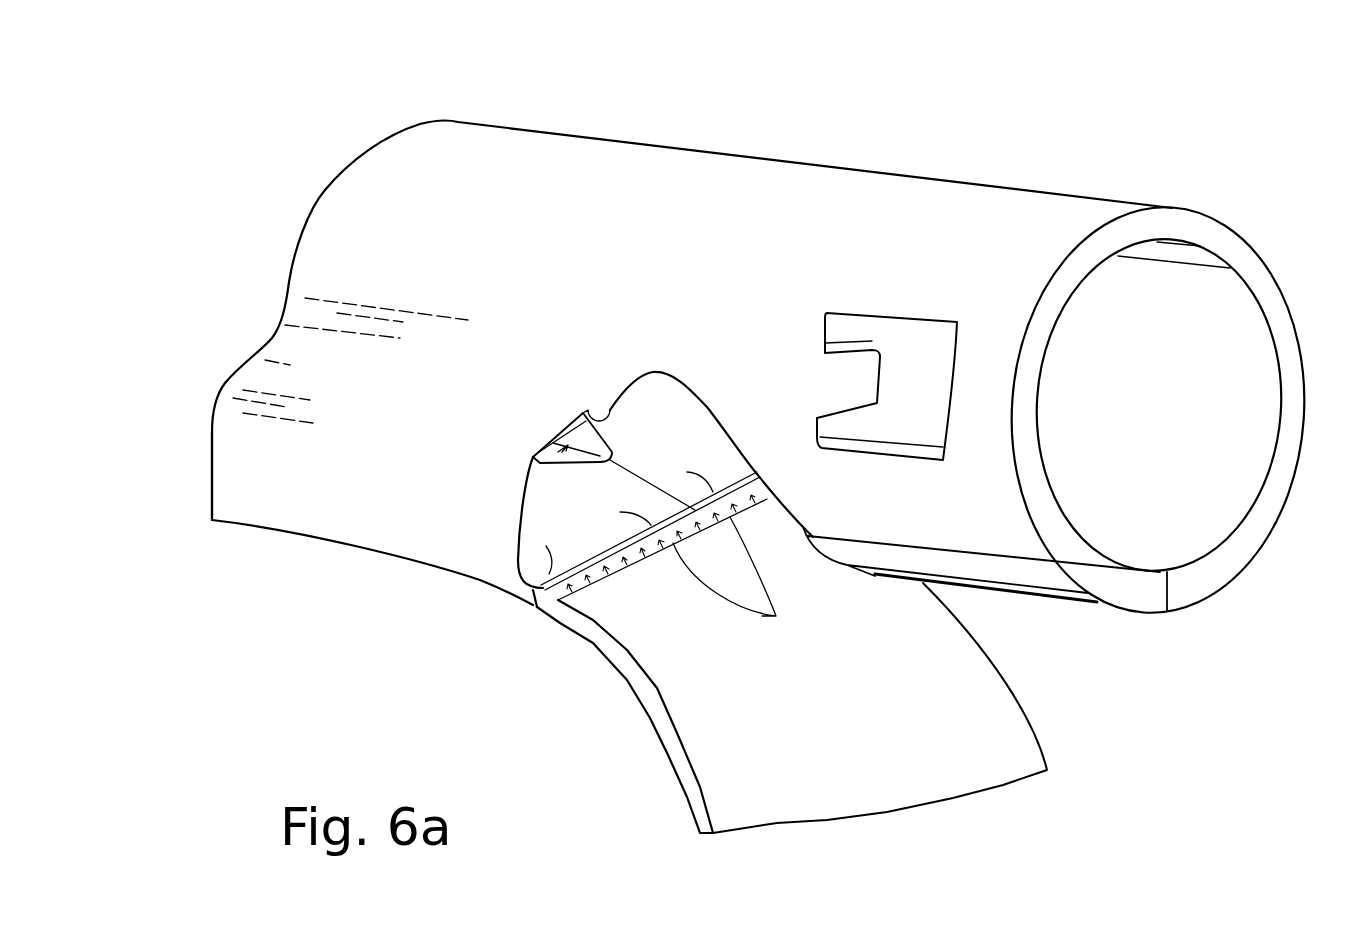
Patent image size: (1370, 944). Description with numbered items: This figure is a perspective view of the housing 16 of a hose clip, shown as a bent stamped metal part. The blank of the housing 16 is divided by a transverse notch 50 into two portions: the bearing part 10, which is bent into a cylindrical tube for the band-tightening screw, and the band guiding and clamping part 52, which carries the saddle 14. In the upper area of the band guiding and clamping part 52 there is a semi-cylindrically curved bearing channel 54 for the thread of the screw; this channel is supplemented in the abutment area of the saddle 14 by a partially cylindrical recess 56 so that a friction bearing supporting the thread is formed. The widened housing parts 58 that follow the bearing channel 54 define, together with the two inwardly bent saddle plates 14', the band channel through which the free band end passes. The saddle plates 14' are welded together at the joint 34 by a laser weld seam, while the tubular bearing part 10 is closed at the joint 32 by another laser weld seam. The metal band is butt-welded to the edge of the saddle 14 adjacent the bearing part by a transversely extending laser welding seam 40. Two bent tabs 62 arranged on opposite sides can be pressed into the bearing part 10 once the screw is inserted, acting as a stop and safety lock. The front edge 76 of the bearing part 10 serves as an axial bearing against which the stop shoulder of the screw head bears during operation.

The bearing part 10 is at (998, 287).
The saddle 14 is at (754, 708).
The saddle plates 14' is at (721, 554).
The housing 16 is at (763, 233).
The joint 32 is at (1136, 568).
The joint 34 is at (643, 477).
The laser welding seam 40 is at (622, 568).
The transverse notch 50 is at (583, 413).
The band guiding and clamping part 52 is at (377, 220).
The bearing channel 54 is at (352, 250).
The partially cylindrical recess 56 is at (522, 460).
The widened housing parts 58 is at (257, 463).
The bent tabs 62 is at (862, 370).
The front edge 76 is at (1206, 231).